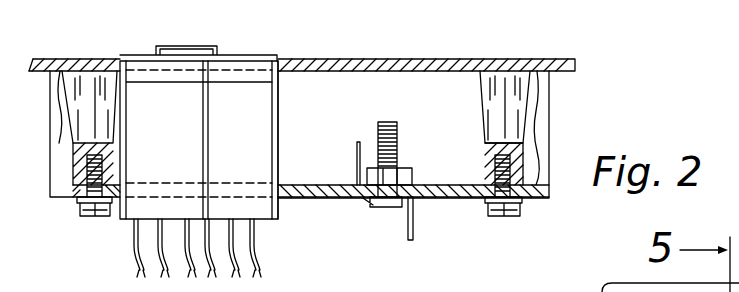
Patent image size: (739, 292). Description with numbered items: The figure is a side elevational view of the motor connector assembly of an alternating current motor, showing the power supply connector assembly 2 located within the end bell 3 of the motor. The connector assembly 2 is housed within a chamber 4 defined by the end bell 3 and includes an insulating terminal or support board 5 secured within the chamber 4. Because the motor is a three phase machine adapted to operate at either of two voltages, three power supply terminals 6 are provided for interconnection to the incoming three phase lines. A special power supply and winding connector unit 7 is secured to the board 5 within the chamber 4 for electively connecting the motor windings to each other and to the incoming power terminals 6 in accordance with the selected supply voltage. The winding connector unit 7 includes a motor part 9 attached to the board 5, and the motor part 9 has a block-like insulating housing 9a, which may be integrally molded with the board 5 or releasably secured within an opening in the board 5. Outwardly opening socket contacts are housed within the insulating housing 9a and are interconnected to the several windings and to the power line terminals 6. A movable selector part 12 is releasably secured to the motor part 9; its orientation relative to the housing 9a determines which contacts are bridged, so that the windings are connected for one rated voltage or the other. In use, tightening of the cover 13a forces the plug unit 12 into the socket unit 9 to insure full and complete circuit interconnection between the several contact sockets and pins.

The power supply connector assembly 2 is at (556, 116).
The end bell 3 is at (531, 63).
The chamber 4 is at (427, 88).
The insulating terminal or support board 5 is at (461, 199).
The power supply terminals 6 is at (387, 202).
The power supply and winding connector unit 7 is at (110, 227).
The motor part 9 is at (227, 116).
The insulating housing 9a is at (279, 167).
The movable selector part 12 is at (254, 50).
The cover 13a is at (80, 30).